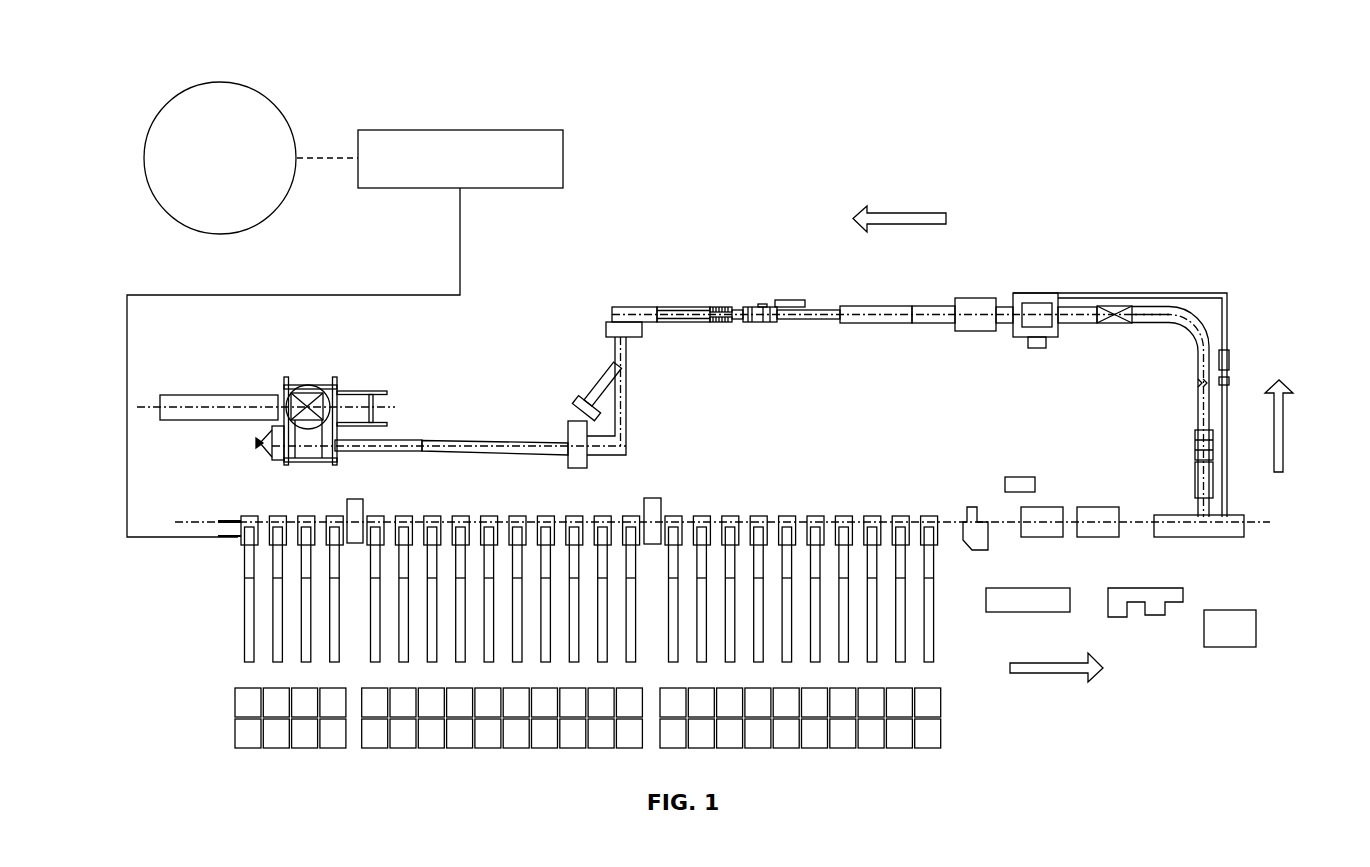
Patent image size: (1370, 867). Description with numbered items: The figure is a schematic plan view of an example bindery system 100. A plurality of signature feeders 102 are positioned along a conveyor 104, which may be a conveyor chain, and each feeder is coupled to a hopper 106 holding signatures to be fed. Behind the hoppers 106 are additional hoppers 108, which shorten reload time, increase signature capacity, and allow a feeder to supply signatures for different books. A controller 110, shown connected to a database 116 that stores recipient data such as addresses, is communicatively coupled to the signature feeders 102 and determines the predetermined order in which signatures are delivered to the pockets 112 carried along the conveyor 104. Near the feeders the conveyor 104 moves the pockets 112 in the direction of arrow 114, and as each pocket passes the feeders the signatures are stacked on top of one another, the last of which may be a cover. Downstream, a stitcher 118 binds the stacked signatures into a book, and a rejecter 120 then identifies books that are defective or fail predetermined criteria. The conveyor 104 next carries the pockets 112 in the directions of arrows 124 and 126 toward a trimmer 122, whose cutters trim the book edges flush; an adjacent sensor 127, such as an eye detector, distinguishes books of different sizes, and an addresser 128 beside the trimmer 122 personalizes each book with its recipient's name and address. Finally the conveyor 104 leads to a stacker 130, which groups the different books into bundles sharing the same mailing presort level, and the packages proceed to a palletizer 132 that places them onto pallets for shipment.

The bindery system 100 is at (766, 104).
The signature feeders 102 is at (436, 517).
The conveyor 104 is at (690, 307).
The hoppers 106 is at (243, 662).
The additional hopper 108 is at (235, 697).
The controller 110 is at (460, 130).
The pockets 112 is at (672, 517).
The arrow 114 is at (1067, 676).
The database 116 is at (228, 82).
The stitcher 118 is at (1045, 507).
The rejecter 120 is at (1103, 507).
The trimmer 122 is at (1037, 293).
The arrow 124 is at (1287, 432).
The arrow 126 is at (905, 211).
The sensor 127 is at (1038, 350).
The addresser 128 is at (975, 298).
The stacker 130 is at (606, 328).
The palletizer 132 is at (308, 383).